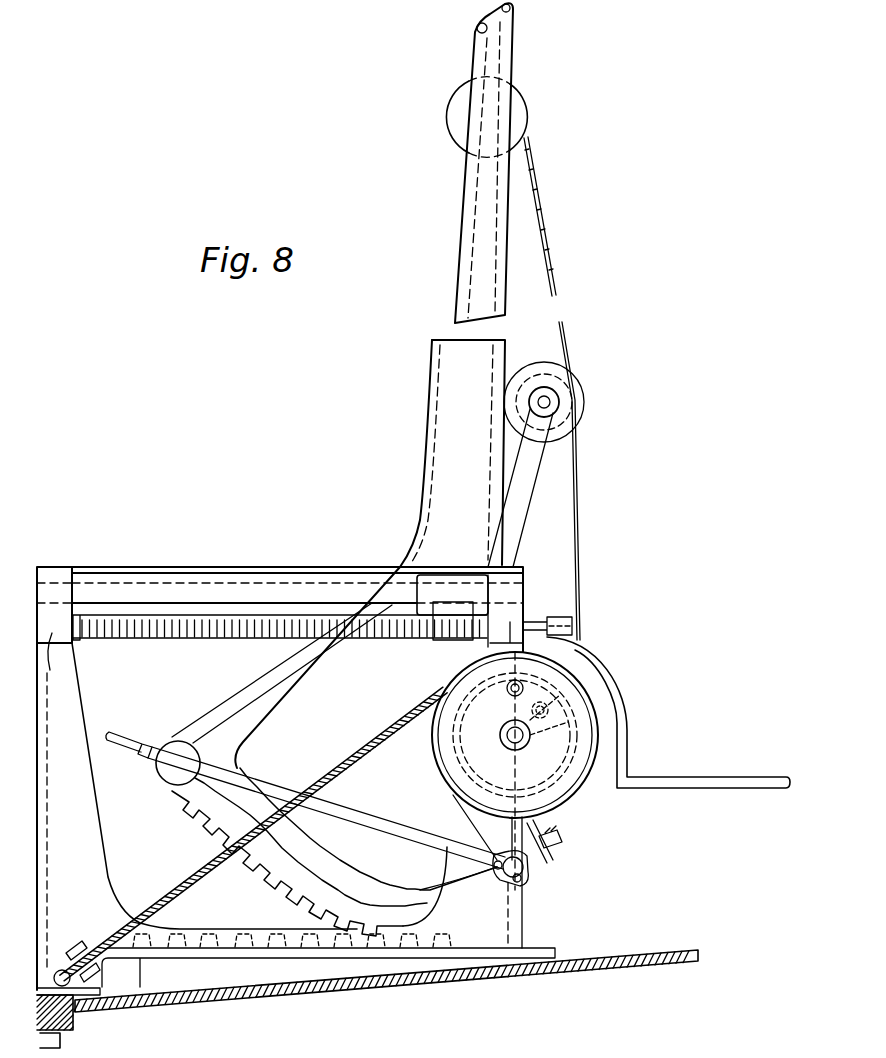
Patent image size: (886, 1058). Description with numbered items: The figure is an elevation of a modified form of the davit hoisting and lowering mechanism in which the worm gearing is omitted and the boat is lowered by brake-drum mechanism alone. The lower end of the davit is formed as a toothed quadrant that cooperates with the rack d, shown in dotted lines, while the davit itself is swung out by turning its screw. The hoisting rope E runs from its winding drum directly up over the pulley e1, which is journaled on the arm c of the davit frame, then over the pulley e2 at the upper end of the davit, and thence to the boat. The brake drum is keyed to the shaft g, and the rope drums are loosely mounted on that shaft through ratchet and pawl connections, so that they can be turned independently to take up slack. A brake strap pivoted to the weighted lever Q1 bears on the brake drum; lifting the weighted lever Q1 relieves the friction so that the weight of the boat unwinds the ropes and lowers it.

The pulley e2 is at (515, 110).
The rope E is at (565, 357).
The pulley e1 is at (582, 408).
The arm c is at (535, 500).
The weighted lever Q1 is at (117, 737).
The shaft g is at (527, 743).
The rack d is at (414, 952).